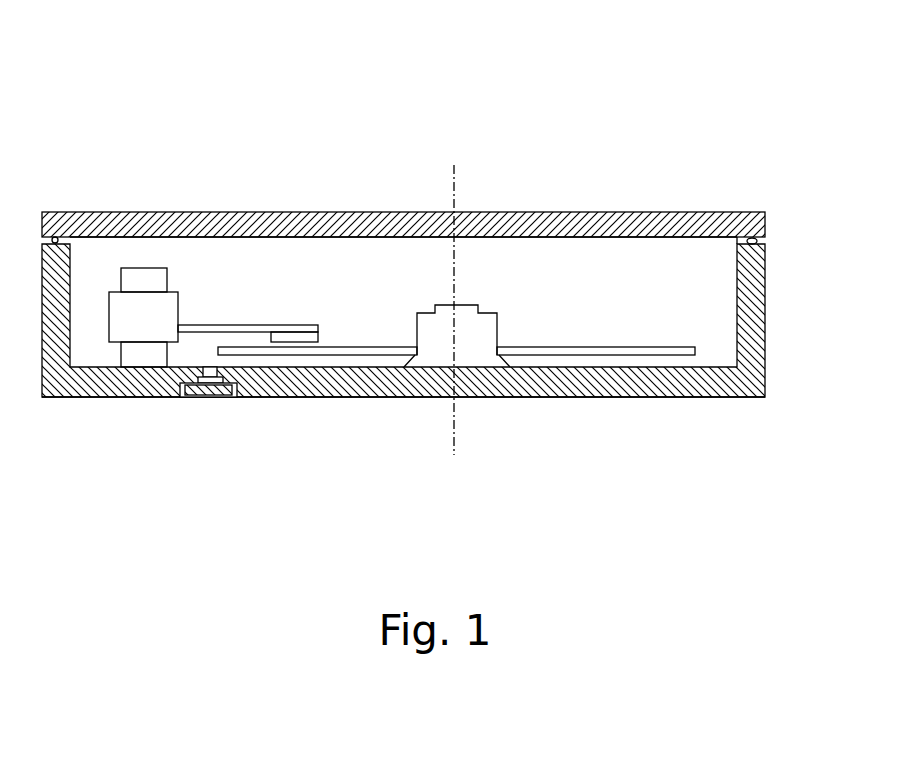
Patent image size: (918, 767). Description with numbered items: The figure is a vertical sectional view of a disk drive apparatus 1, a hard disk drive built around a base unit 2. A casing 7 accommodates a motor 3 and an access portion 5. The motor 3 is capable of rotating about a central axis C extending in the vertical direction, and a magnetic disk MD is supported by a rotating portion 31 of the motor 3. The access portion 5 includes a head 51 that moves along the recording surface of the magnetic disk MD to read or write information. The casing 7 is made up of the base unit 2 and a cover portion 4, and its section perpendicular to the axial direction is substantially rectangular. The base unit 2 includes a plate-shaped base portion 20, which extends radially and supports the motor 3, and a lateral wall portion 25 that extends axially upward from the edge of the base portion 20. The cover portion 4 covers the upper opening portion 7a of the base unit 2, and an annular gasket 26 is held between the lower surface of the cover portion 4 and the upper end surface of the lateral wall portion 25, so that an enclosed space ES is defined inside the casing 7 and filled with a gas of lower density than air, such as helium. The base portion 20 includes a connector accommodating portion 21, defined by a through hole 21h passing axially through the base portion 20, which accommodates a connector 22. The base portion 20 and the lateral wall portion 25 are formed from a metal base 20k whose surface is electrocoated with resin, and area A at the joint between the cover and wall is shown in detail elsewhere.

The disk drive apparatus 1 is at (688, 68).
The base unit 2 is at (425, 367).
The motor 3 is at (488, 263).
The cover portion 4 is at (362, 218).
The access portion 5 is at (234, 271).
The casing 7 is at (433, 308).
The upper opening portion 7a is at (553, 245).
The base portion 20 is at (332, 398).
The base 20k is at (720, 398).
The connector accommodating portion 21 is at (232, 399).
The through hole 21h is at (210, 365).
The connector 22 is at (213, 398).
The lateral wall portion 25 is at (766, 290).
The gasket 26 is at (760, 242).
The rotating portion 31 is at (469, 296).
The head 51 is at (274, 316).
The area A is at (783, 215).
The central axis C is at (454, 200).
The enclosed space ES is at (686, 270).
The magnetic disk MD is at (617, 345).